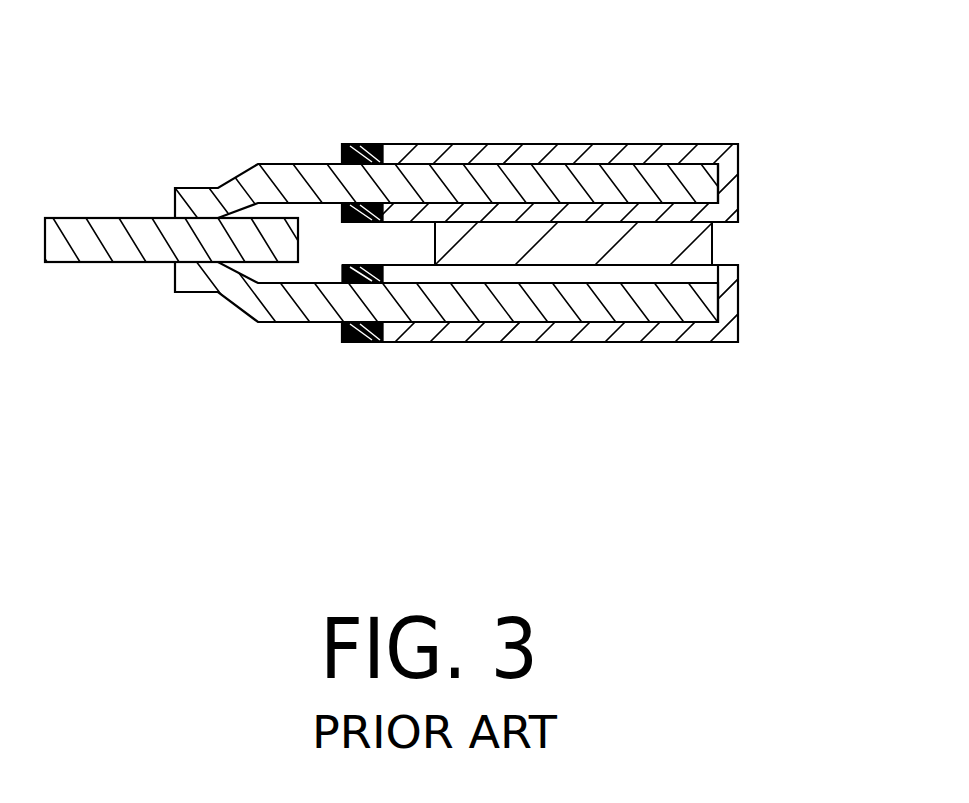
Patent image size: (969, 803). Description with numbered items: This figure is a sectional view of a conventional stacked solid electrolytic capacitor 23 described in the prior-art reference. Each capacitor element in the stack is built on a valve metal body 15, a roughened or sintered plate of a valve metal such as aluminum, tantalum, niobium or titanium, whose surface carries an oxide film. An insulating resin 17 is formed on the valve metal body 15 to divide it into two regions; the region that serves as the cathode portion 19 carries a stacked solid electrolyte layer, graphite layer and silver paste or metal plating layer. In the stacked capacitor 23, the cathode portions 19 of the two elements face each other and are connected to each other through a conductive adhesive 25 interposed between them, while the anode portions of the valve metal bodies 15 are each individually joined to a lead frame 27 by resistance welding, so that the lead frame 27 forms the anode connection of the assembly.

The valve metal body 15 is at (300, 172).
The insulating resin 17 is at (376, 143).
The cathode portion 19 is at (573, 146).
The conventional stacked solid electrolytic capacitor 23 is at (514, 238).
The conductive adhesive 25 is at (702, 245).
The lead frame 27 is at (90, 232).